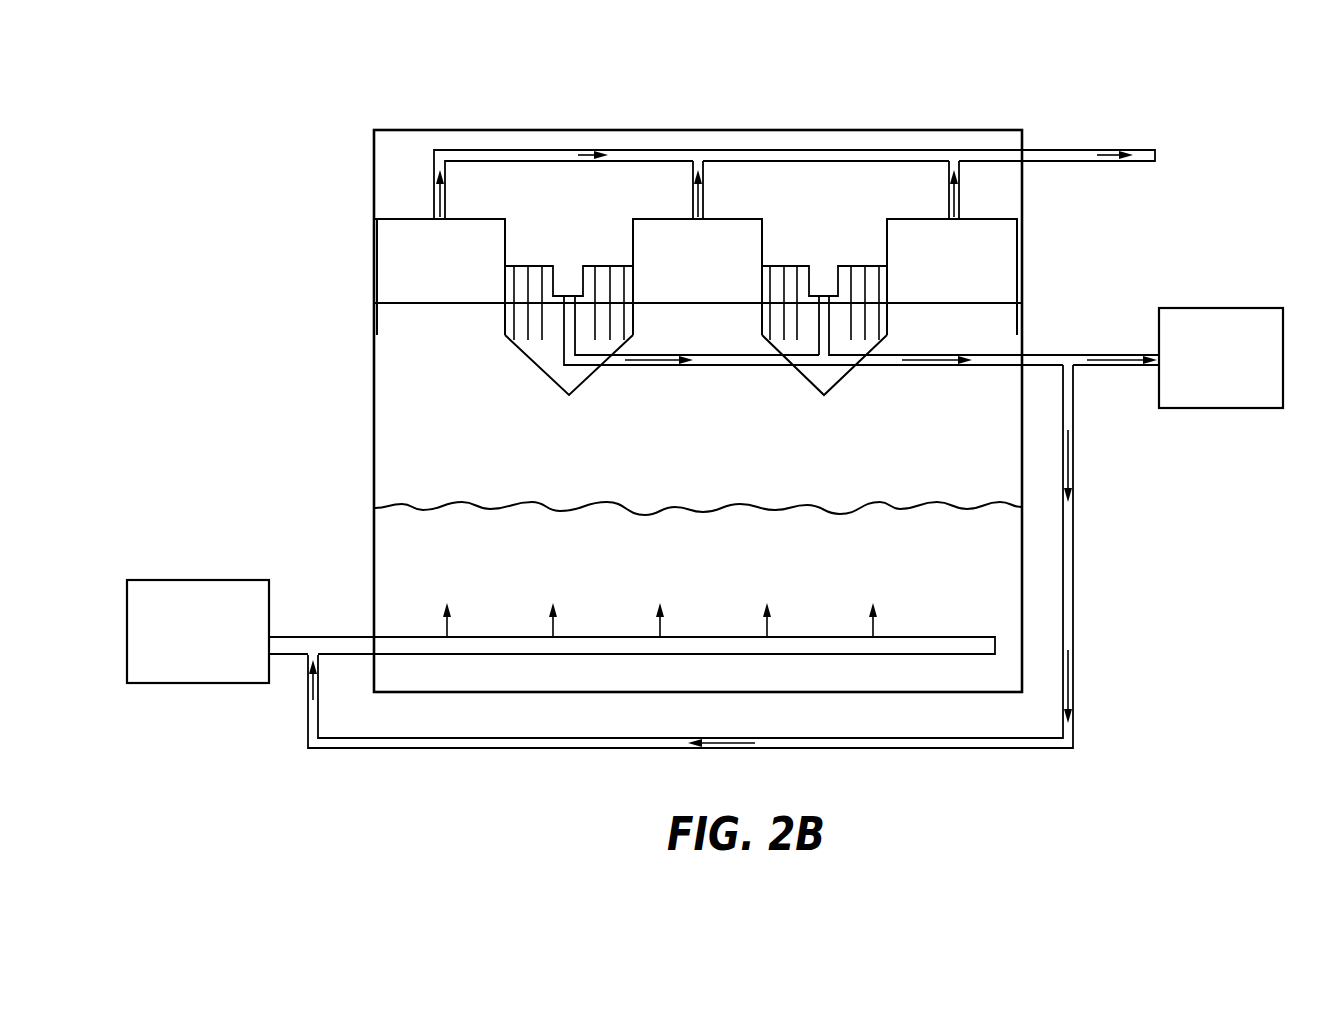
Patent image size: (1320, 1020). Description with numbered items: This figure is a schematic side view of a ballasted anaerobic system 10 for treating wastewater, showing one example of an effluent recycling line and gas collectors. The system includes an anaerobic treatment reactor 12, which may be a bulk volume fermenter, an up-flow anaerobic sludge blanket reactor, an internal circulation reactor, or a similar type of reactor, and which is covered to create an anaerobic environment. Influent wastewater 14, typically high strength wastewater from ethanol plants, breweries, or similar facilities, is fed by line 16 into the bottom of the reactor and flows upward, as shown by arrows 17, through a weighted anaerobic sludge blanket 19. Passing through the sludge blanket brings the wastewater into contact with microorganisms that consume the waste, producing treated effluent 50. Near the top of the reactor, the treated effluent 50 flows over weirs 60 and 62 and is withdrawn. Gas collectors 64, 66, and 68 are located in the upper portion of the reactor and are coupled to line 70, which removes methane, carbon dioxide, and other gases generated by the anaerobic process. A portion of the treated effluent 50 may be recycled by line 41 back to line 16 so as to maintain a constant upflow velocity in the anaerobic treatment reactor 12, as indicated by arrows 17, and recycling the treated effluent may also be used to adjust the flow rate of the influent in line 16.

The ballasted anaerobic system 10 is at (402, 83).
The anaerobic treatment reactor 12 is at (1022, 195).
The influent wastewater 14 is at (185, 673).
The line 16 is at (296, 643).
The arrows 17 is at (450, 625).
The weighted anaerobic sludge blanket 19 is at (840, 512).
The line 41 is at (927, 743).
The treated effluent 50 is at (1208, 400).
The weir 60 is at (566, 278).
The weir 62 is at (820, 278).
The gas collector 64 is at (453, 284).
The gas collector 66 is at (709, 284).
The gas collector 68 is at (964, 284).
The line 70 is at (1058, 148).